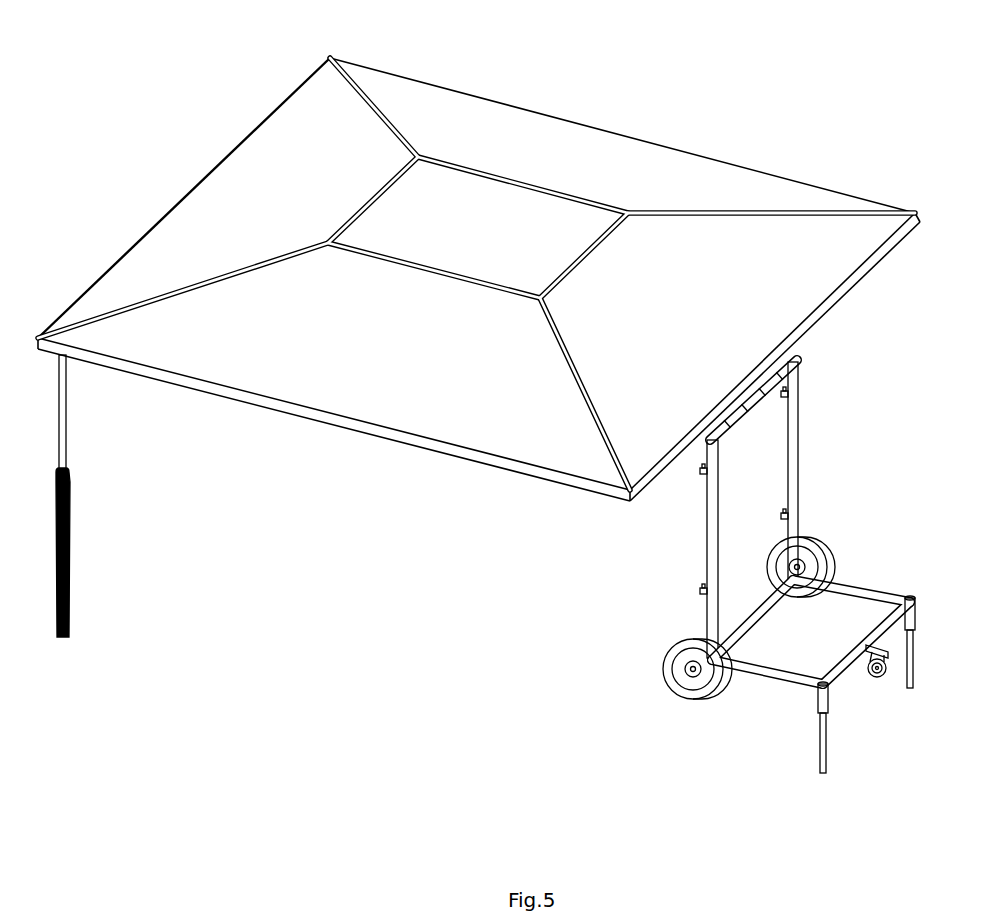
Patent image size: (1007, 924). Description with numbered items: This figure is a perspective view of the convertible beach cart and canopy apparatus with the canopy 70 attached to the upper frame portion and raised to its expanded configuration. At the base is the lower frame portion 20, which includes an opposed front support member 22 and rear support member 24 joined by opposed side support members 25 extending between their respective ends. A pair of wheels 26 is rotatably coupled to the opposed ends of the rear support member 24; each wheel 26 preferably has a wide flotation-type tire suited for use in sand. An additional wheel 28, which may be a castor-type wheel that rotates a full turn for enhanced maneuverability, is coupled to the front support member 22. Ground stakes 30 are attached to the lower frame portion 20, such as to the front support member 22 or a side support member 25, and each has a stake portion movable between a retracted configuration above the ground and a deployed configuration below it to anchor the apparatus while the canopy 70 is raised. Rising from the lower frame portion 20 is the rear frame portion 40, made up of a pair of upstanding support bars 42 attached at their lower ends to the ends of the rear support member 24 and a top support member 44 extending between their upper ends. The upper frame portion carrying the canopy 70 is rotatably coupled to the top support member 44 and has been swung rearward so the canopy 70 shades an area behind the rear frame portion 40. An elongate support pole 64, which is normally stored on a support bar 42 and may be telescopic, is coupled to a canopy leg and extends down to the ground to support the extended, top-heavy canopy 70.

The lower frame portion 20 is at (774, 679).
The front support member 22 is at (842, 674).
The rear support member 24 is at (762, 606).
The side support member 25 is at (760, 670).
The wheel 26 is at (826, 548).
The wheel 28 is at (876, 677).
The ground stake 30 is at (907, 690).
The rear frame portion 40 is at (732, 509).
The upstanding support bar 42 is at (791, 492).
The top support member 44 is at (787, 364).
The support pole 64 is at (68, 520).
The canopy 70 is at (476, 134).